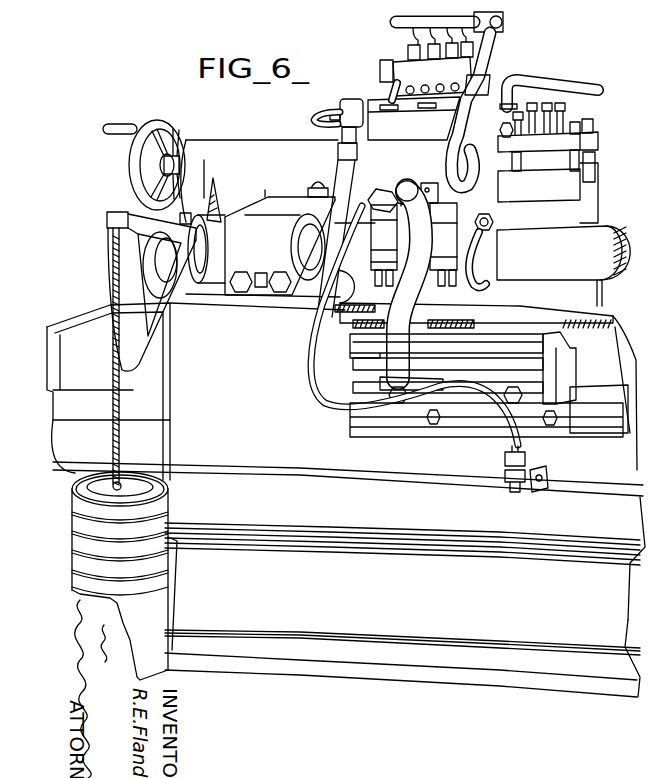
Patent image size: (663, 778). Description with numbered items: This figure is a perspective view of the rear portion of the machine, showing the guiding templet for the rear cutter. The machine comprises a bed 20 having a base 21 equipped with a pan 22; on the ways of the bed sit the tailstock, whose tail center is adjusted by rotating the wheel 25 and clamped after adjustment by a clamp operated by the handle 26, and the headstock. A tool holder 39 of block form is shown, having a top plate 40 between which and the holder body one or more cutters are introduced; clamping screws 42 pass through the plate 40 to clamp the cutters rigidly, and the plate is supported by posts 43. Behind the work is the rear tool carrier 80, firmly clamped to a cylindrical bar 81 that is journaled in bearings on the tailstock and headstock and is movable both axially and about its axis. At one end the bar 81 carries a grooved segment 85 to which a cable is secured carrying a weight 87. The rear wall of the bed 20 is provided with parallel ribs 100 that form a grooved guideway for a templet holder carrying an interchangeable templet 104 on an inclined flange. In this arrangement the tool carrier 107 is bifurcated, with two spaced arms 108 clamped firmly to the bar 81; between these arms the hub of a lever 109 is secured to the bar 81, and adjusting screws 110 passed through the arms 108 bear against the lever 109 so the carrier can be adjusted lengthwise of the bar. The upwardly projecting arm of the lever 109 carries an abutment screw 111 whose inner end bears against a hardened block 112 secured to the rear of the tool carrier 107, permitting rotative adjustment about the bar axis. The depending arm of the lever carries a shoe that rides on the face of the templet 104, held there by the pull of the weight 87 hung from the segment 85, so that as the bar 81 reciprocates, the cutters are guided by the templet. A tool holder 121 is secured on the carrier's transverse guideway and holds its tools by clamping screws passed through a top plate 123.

The bed 20 is at (348, 388).
The base 21 is at (402, 643).
The pan 22 is at (405, 573).
The wheel 25 is at (165, 120).
The handle 26 is at (333, 203).
The tool holder 39 is at (595, 184).
The top plate 40 is at (598, 137).
The clamping screws 42 is at (567, 120).
The posts 43 is at (517, 155).
The rear tool carrier 80 is at (414, 118).
The cylindrical bar 81 is at (607, 247).
The grooved segment 85 is at (108, 214).
The weight 87 is at (153, 620).
The parallel ribs 100 is at (560, 342).
The templet 104 is at (570, 378).
The tool carrier 107 is at (425, 180).
The arms 108 is at (497, 247).
The lever 109 is at (405, 291).
The adjusting screws 110 is at (495, 226).
The abutment screw 111 is at (390, 187).
The hardened block 112 is at (440, 223).
The tool holder 121 is at (372, 100).
The top plate 123 is at (398, 63).